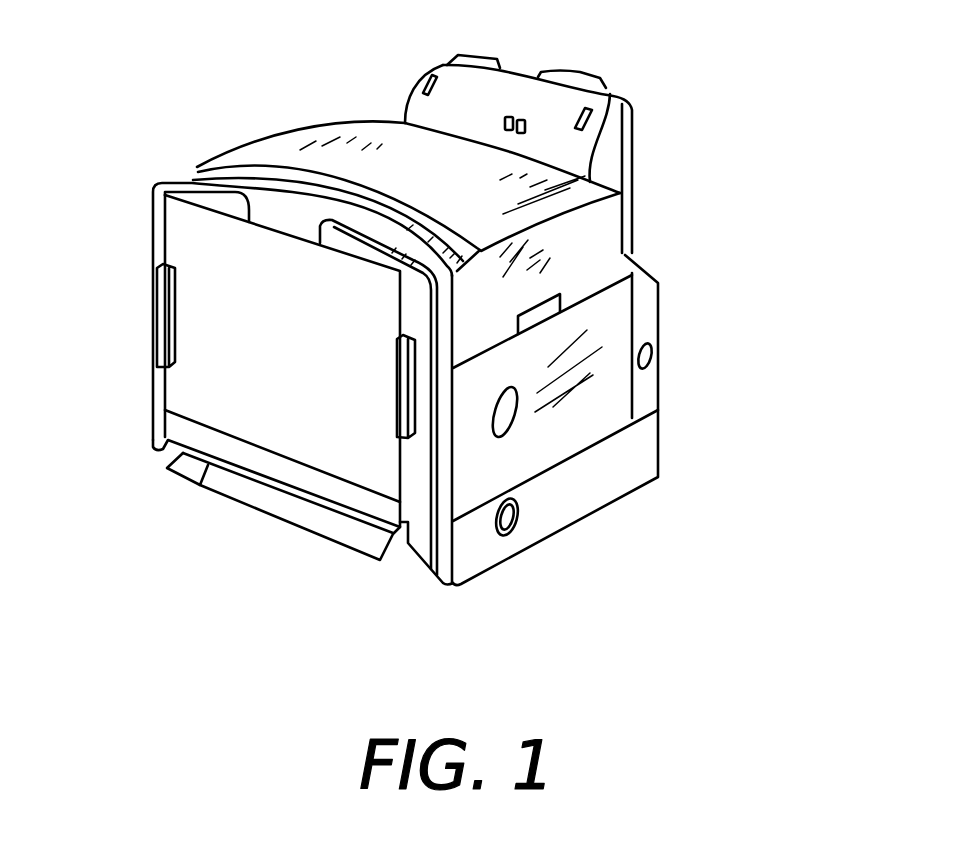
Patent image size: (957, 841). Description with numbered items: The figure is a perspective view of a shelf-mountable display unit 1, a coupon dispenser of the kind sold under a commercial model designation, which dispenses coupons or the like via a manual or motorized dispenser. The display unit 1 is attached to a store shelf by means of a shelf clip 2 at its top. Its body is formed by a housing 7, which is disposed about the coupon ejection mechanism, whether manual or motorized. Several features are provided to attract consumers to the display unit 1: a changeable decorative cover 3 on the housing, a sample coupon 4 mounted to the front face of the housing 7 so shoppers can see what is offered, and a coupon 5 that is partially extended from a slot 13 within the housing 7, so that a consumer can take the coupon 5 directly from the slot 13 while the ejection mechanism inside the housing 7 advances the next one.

The shelf-mountable display unit 1 is at (610, 507).
The shelf clip 2 is at (538, 69).
The changeable decorative cover 3 is at (630, 452).
The sample coupon 4 is at (190, 232).
The coupon 5 is at (257, 507).
The housing 7 is at (423, 557).
The slot 13 is at (200, 485).